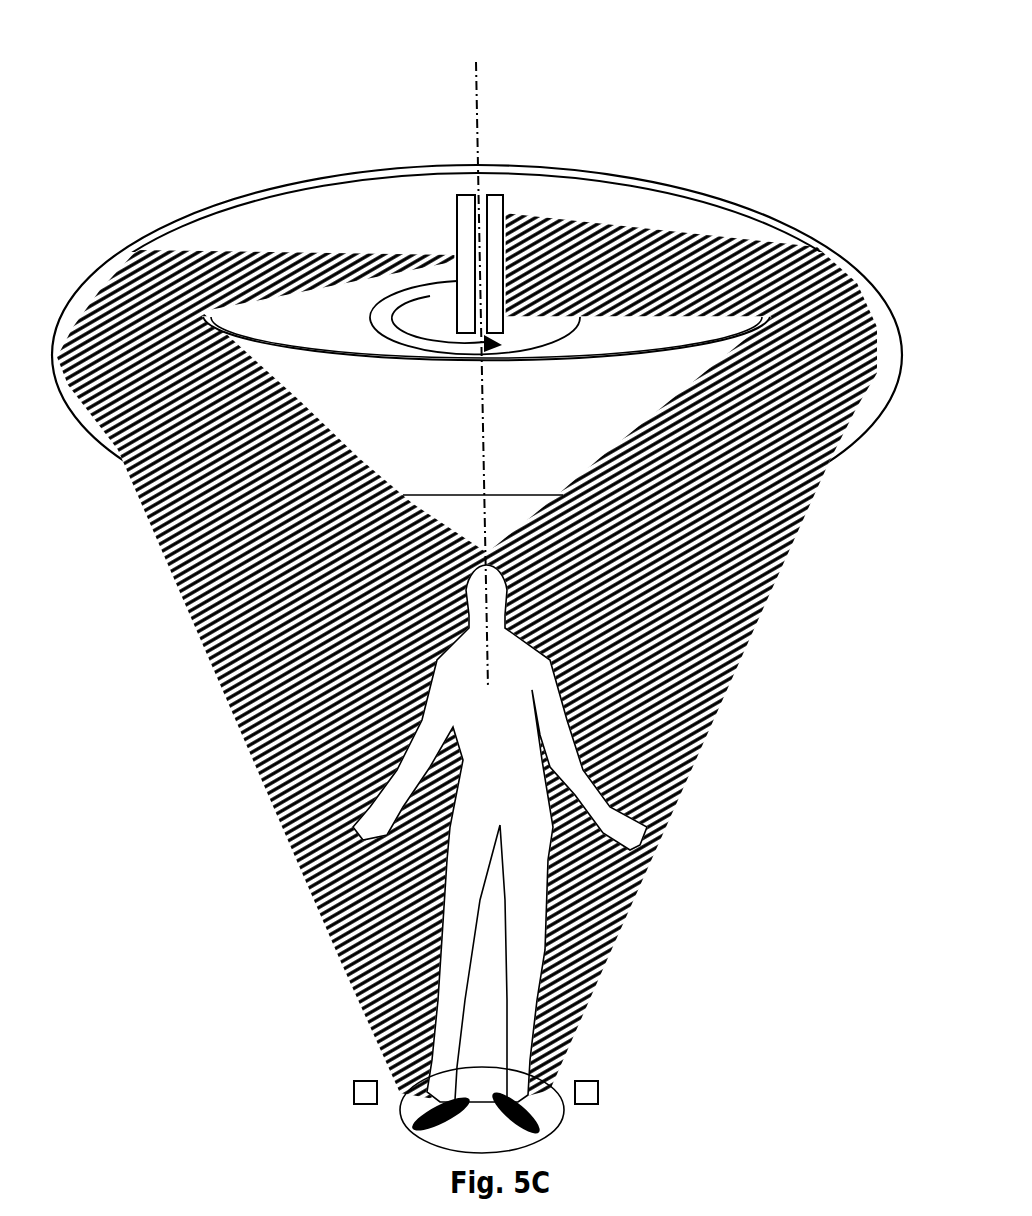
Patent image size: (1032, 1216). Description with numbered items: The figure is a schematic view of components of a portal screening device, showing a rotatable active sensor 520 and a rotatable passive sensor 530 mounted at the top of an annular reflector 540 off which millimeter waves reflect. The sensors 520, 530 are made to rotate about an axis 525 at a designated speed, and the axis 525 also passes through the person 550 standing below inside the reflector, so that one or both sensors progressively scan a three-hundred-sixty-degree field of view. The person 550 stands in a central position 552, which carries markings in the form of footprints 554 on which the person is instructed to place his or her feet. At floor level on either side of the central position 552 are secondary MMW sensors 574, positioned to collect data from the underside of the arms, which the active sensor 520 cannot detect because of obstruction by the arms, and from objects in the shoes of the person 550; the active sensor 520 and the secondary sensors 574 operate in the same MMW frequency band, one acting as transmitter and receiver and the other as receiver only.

The active sensor 520 is at (455, 220).
The axis 525 is at (470, 60).
The passive sensor 530 is at (503, 190).
The annular reflector 540 is at (702, 178).
The person 550 is at (453, 703).
The central position 552 is at (550, 1103).
The footprints 554 is at (507, 1120).
The secondary MMW sensors 574 is at (345, 1080).